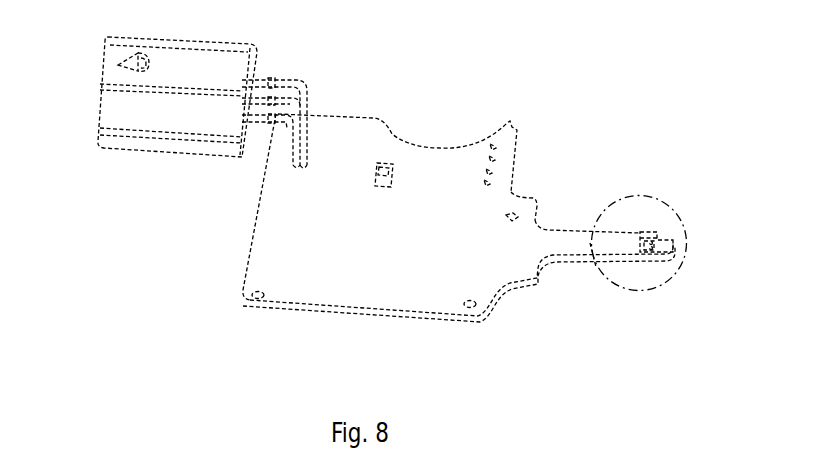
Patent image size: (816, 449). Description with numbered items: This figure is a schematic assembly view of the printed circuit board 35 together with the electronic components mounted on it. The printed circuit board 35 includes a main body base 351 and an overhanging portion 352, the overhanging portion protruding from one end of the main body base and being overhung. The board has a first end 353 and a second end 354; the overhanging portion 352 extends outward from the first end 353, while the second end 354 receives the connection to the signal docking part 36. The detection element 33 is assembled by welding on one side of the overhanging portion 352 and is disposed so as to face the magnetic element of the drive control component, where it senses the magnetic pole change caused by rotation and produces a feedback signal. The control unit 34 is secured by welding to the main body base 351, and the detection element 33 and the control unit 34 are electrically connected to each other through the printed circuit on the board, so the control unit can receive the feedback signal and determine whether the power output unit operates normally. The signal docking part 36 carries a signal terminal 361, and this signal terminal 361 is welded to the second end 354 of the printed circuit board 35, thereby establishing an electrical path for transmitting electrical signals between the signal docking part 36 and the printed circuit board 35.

The signal docking part 36 is at (103, 72).
The signal terminal 361 is at (306, 100).
The control unit 34 is at (388, 162).
The printed circuit board 35 is at (432, 225).
The main body base 351 is at (462, 253).
The overhanging portion 352 is at (615, 243).
The first end 353 is at (535, 215).
The second end 354 is at (268, 192).
The detection element 33 is at (648, 232).